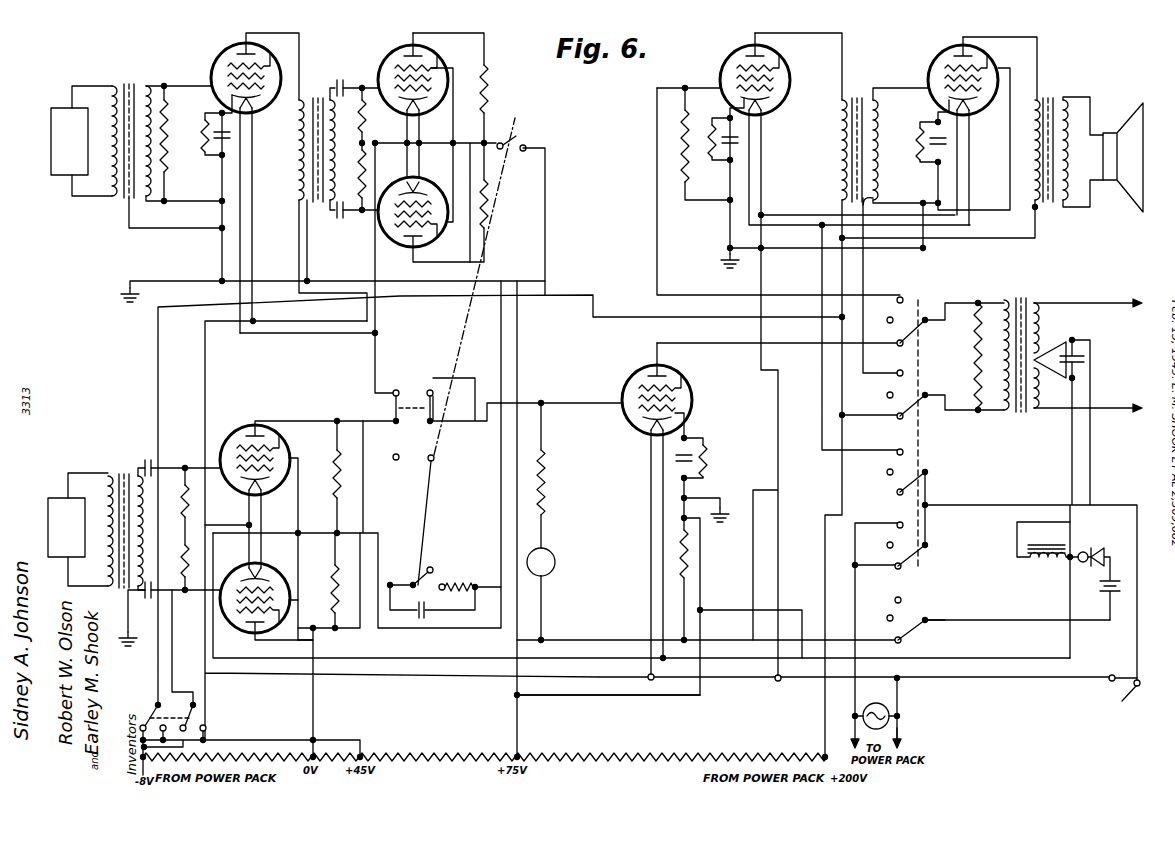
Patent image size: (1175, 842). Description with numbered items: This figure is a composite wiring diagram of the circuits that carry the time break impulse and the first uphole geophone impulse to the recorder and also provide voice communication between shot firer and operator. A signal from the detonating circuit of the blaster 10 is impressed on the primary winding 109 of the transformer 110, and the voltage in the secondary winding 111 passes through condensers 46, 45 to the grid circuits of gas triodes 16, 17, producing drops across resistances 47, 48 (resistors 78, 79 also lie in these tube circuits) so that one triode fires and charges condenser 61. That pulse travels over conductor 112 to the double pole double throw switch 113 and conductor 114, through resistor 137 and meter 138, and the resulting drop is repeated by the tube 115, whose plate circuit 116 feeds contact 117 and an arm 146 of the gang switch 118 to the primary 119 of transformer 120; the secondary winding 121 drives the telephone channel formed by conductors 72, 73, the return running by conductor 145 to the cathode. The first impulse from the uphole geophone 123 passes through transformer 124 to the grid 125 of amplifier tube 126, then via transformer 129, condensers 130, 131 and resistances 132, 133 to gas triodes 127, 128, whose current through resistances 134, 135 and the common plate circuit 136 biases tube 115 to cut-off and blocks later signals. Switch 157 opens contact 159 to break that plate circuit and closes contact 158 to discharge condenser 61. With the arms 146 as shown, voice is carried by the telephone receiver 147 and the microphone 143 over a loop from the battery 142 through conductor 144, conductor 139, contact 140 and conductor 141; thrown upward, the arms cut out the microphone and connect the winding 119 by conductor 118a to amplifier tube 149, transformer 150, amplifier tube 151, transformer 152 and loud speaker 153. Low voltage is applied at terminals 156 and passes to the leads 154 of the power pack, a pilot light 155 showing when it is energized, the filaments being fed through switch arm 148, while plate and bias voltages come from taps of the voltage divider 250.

The blaster 10 is at (54, 498).
The gas triode 16 is at (236, 430).
The gas triode 17 is at (275, 625).
The condenser 45 is at (149, 596).
The condenser 46 is at (149, 460).
The resistance 47 is at (187, 592).
The resistance 48 is at (190, 503).
The condenser 61 is at (415, 618).
The conductor 72 is at (1115, 408).
The conductor 73 is at (1113, 305).
The resistor 78 is at (337, 472).
The resistor 79 is at (338, 600).
The primary winding 109 is at (99, 482).
The transformer 110 is at (122, 476).
The secondary winding 111 is at (147, 500).
The conductor 112 is at (462, 490).
The double pole double throw switch 113 is at (404, 391).
The conductor 114 is at (546, 400).
The repeater tube 115 is at (631, 376).
The plate circuit 116 is at (790, 350).
The contact 117 is at (922, 347).
The gang switch 118 is at (922, 461).
The conductor 118a is at (703, 294).
The primary winding 119 is at (980, 302).
The transformer 120 is at (1022, 300).
The secondary winding 121 is at (1046, 332).
The geophone 123 is at (60, 142).
The transformer 124 is at (129, 84).
The grid 125 is at (214, 68).
The amplifier tube 126 is at (243, 42).
The gas triode 127 is at (398, 46).
The gas triode 128 is at (402, 245).
The transformer 129 is at (313, 96).
The condenser 130 is at (343, 84).
The condenser 131 is at (338, 216).
The resistance 132 is at (351, 117).
The resistance 133 is at (365, 160).
The resistance 134 is at (490, 100).
The resistance 135 is at (490, 215).
The plate circuit 136 is at (547, 277).
The resistor 137 is at (548, 488).
The milliammeter 138 is at (556, 562).
The conductor 139 is at (731, 612).
The contact 140 is at (903, 641).
The conductor 141 is at (1022, 612).
The battery 142 is at (1116, 614).
The microphone 143 is at (1098, 550).
The conductor 144 is at (998, 658).
The conductor 145 is at (646, 700).
The switch arm 146 is at (926, 317).
The telephone receiver 147 is at (1061, 568).
The switch arm 148 is at (928, 472).
The amplifier tube 149 is at (737, 52).
The transformer 150 is at (867, 96).
The amplifier tube 151 is at (939, 57).
The transformer 152 is at (1050, 96).
The loud speaker 153 is at (1128, 200).
The lead 154 is at (897, 728).
The pilot light 155 is at (892, 706).
The terminal 156 is at (1120, 704).
The switch 157 is at (494, 244).
The contact 158 is at (433, 567).
The contact 159 is at (522, 110).
The voltage divider 250 is at (458, 741).